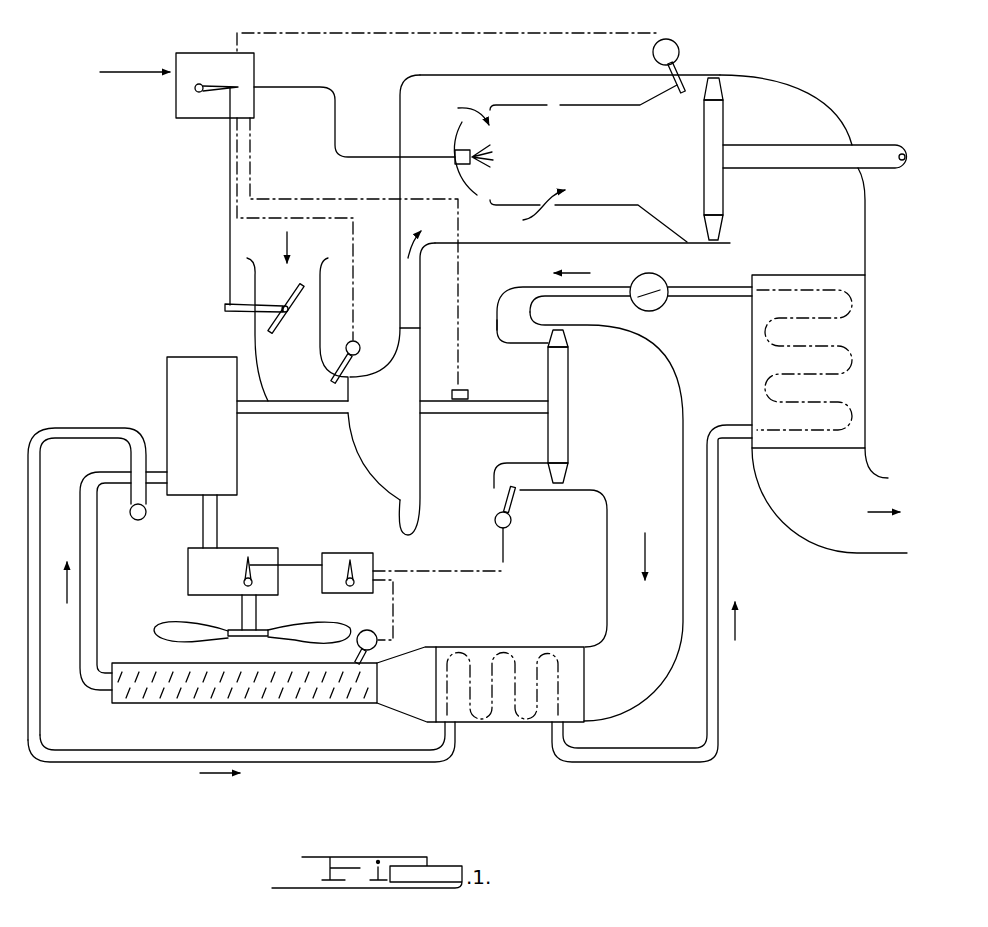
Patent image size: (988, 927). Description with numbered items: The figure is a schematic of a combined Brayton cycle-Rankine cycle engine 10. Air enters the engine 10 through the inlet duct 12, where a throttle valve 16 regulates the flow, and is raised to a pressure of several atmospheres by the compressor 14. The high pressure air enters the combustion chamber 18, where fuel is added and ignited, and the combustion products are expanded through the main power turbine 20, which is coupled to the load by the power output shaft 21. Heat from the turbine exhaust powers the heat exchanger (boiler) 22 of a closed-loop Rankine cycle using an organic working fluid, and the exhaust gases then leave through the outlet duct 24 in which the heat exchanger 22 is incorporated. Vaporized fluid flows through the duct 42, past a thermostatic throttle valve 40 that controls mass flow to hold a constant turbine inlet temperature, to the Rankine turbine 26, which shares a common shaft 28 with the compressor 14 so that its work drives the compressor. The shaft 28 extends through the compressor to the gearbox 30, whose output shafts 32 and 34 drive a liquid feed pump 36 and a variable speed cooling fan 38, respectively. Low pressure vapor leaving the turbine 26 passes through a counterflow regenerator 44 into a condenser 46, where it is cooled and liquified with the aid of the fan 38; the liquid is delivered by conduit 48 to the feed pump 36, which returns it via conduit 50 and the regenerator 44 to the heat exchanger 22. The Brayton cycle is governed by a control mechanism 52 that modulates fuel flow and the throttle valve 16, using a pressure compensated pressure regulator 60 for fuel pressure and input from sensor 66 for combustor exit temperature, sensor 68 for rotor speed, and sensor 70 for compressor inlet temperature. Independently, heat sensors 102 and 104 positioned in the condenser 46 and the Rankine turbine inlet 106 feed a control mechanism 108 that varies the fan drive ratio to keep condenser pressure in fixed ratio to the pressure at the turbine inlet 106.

The engine 10 is at (150, 269).
The inlet duct 12 is at (333, 329).
The compressor 14 is at (412, 381).
The throttle valve 16 is at (262, 316).
The combustion chamber 18 is at (604, 147).
The main power turbine 20 is at (716, 118).
The power output shaft 21 is at (800, 165).
The heat exchanger (boiler) 22 is at (868, 322).
The outlet duct 24 is at (857, 553).
The Rankine turbine 26 is at (565, 373).
The common shaft 28 is at (262, 415).
The gearbox 30 is at (167, 373).
The output shaft 32 is at (155, 499).
The output shaft 34 is at (218, 521).
The liquid feed pump 36 is at (130, 459).
The variable speed cooling fan 38 is at (188, 575).
The thermostatic throttle valve 40 is at (655, 312).
The duct 42 is at (692, 284).
The counterflow regenerator 44 is at (495, 645).
The condenser 46 is at (285, 705).
The conduit 48 is at (92, 689).
The conduit 50 is at (355, 762).
The control mechanism 52 is at (176, 100).
The pressure compensated pressure regulator 60 is at (500, 345).
The sensor 66 is at (679, 47).
The sensor 68 is at (470, 393).
The sensor 70 is at (360, 345).
The heat sensor 102 is at (380, 628).
The heat sensor 104 is at (512, 520).
The Rankine turbine inlet 106 is at (492, 484).
The control mechanism 108 is at (338, 548).